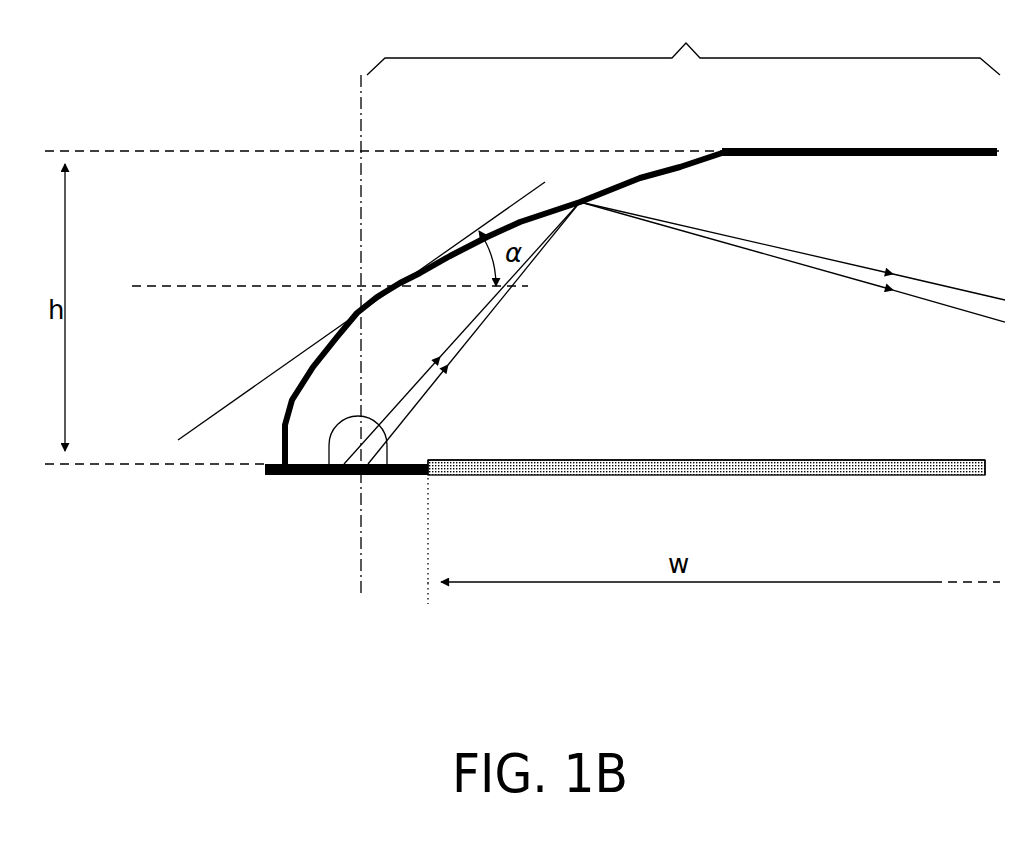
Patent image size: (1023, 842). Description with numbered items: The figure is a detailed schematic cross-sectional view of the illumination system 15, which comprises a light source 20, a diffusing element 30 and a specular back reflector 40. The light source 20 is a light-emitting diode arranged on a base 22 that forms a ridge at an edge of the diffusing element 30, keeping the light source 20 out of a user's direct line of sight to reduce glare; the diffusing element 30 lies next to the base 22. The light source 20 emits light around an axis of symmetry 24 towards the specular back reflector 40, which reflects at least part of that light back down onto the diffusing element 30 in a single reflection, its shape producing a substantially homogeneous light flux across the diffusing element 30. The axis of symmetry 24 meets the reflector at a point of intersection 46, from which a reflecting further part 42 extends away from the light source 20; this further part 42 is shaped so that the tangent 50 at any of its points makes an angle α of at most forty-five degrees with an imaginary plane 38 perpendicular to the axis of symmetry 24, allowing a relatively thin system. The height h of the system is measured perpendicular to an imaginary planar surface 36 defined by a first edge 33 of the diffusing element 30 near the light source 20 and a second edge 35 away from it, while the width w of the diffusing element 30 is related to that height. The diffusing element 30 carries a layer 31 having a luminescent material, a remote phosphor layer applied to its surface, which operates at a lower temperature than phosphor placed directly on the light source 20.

The illumination system 15 is at (527, 615).
The light source 20 is at (404, 440).
The base 22 is at (332, 476).
The axis of symmetry 24 is at (361, 213).
The diffusing element 30 is at (797, 477).
The layer having a luminescent material 31 is at (776, 460).
The first edge 33 is at (442, 486).
The second edge 35 is at (972, 495).
The imaginary planar surface 36 is at (185, 466).
The imaginary plane 38 is at (163, 288).
The specular back reflector 40 is at (896, 176).
The reflecting further part 42 is at (683, 43).
The point of intersection 46 is at (352, 303).
The tangent 50 is at (240, 393).